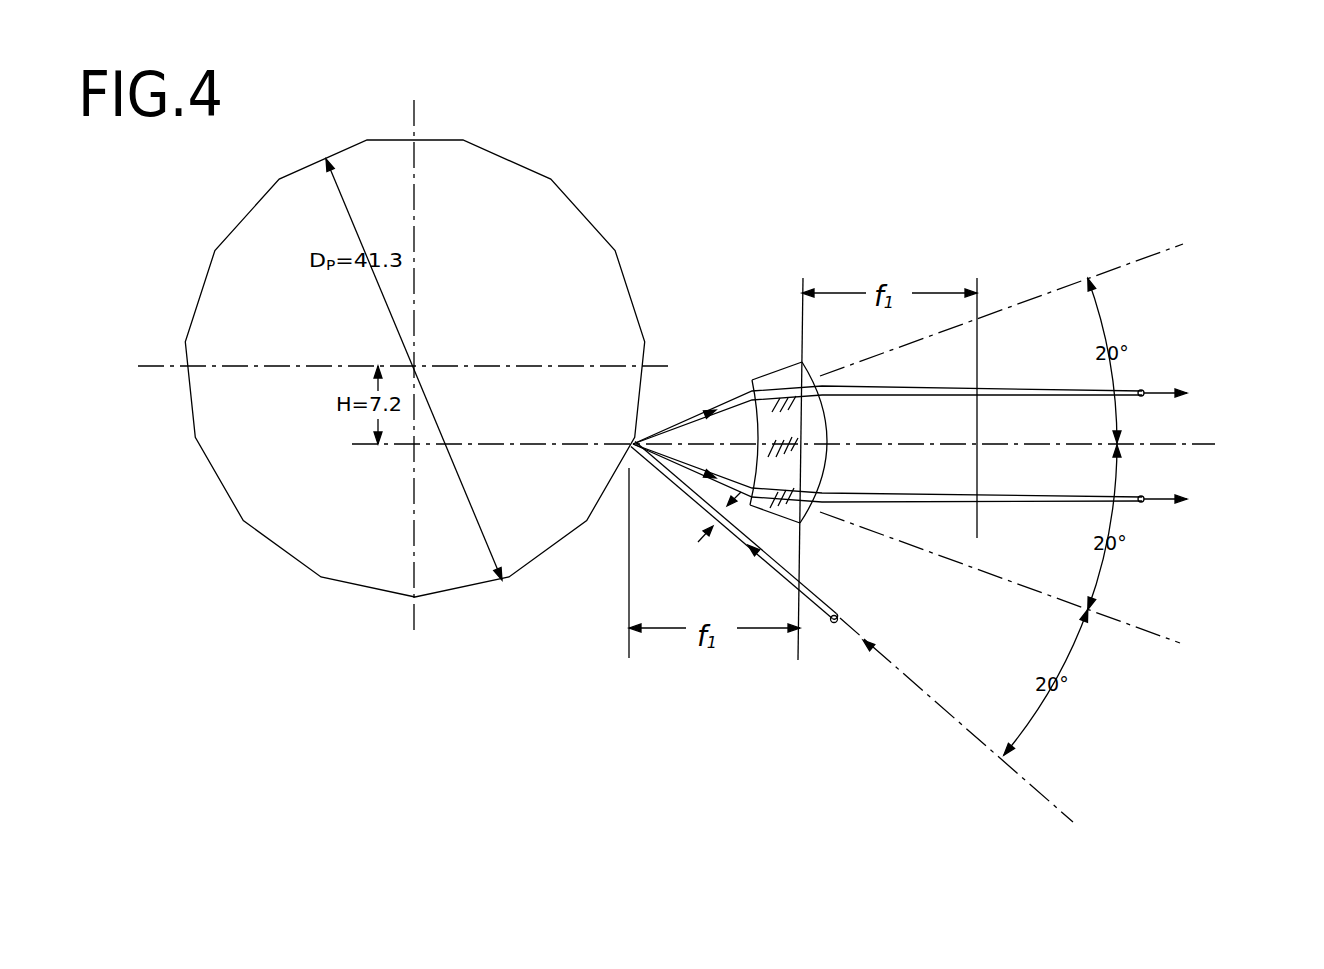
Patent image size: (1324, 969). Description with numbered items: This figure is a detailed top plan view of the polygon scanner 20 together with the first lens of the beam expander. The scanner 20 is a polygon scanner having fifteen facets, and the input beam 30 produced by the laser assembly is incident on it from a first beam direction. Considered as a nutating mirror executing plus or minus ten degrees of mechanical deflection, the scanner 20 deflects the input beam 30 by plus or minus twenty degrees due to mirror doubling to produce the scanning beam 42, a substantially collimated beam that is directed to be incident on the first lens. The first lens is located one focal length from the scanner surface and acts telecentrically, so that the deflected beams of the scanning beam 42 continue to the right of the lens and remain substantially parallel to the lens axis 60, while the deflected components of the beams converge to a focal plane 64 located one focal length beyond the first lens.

The polygon scanner 20 is at (203, 300).
The input beam 30 is at (828, 625).
The scanning beam 42 is at (688, 407).
The lens axis 60 is at (1197, 447).
The focal plane 64 is at (980, 310).